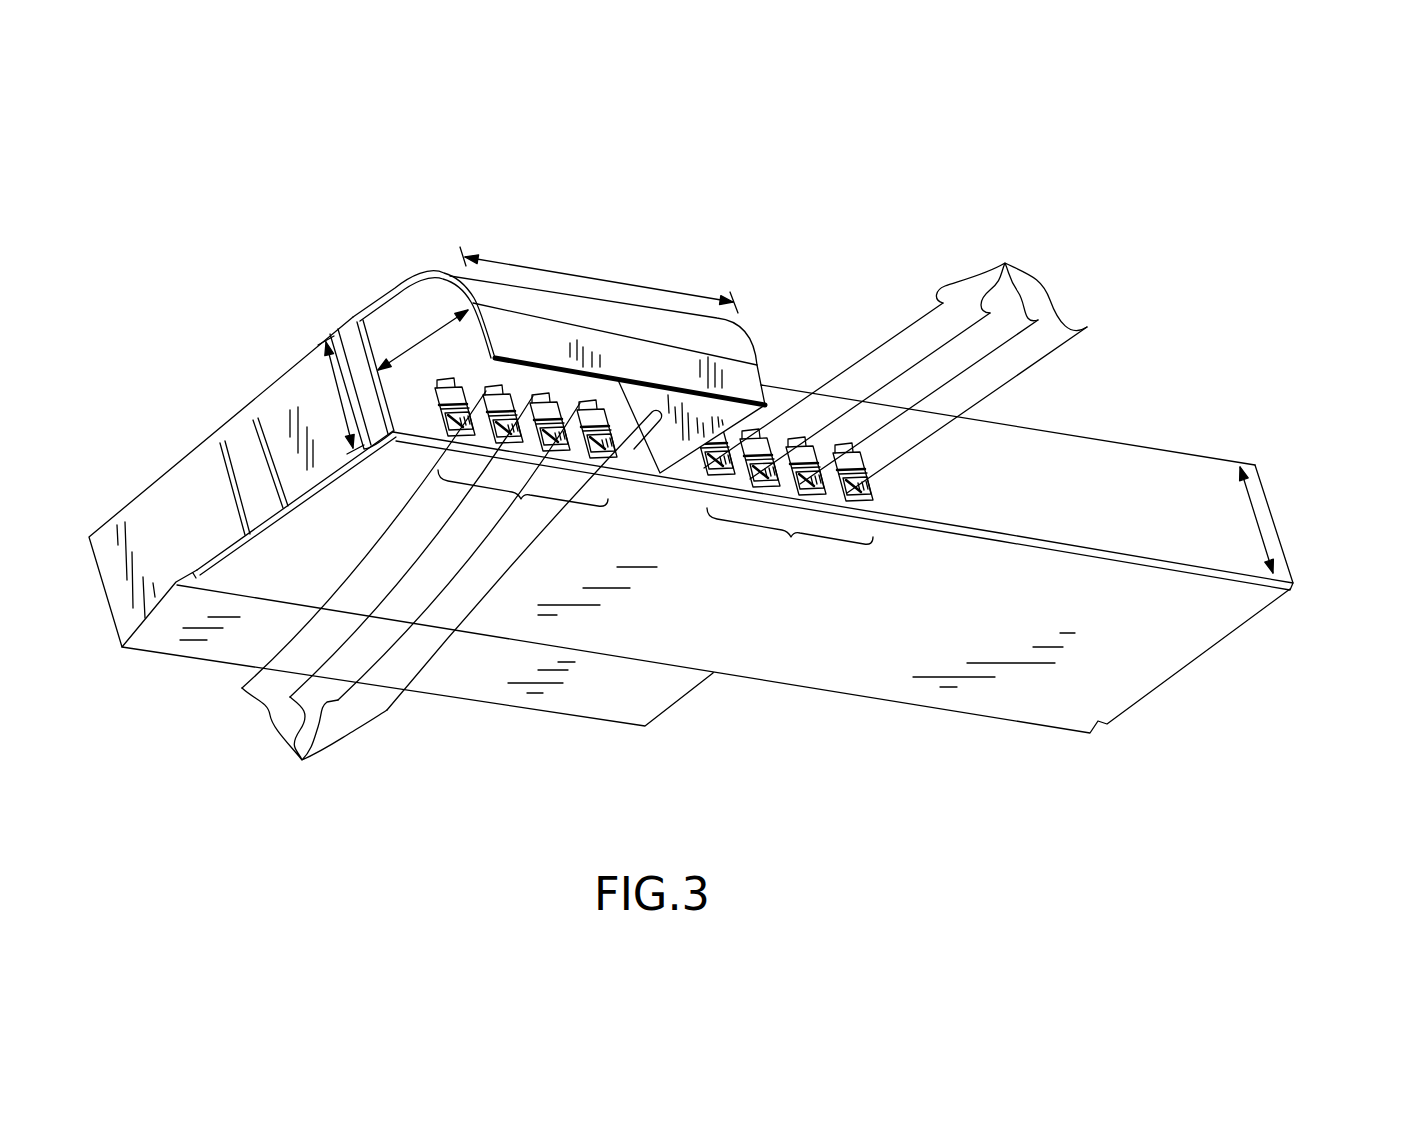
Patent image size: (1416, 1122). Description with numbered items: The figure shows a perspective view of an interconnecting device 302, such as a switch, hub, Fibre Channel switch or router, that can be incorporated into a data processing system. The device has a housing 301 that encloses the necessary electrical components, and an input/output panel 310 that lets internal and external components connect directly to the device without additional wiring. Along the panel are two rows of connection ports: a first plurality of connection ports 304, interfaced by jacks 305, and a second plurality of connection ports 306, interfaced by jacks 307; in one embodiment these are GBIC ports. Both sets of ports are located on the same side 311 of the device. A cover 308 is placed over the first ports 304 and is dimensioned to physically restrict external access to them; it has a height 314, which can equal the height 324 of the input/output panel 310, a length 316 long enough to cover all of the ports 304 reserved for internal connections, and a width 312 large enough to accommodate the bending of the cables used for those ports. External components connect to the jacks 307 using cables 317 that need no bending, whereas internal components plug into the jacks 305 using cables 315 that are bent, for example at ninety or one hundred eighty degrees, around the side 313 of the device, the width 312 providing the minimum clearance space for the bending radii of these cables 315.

The housing 301 is at (156, 513).
The interconnecting device 302 is at (744, 453).
The first plurality of connection ports 304 is at (495, 458).
The jacks 305 is at (440, 419).
The second plurality of connection ports 306 is at (829, 495).
The jacks 307 is at (878, 500).
The cover 308 is at (748, 372).
The input/output panel 310 is at (1043, 442).
The side 311 is at (1280, 521).
The width 312 is at (412, 345).
The side 313 is at (1140, 668).
The height 314 is at (336, 389).
The cables 315 is at (452, 591).
The length 316 is at (592, 279).
The cables 317 is at (895, 361).
The height 324 is at (1248, 490).